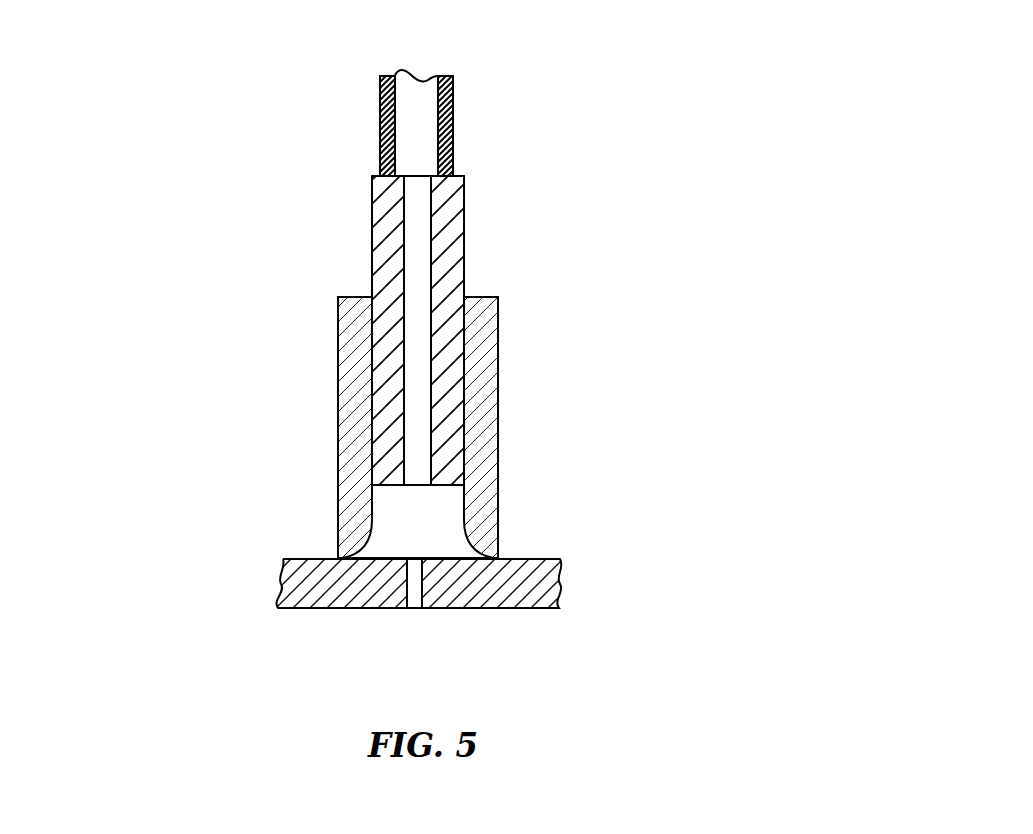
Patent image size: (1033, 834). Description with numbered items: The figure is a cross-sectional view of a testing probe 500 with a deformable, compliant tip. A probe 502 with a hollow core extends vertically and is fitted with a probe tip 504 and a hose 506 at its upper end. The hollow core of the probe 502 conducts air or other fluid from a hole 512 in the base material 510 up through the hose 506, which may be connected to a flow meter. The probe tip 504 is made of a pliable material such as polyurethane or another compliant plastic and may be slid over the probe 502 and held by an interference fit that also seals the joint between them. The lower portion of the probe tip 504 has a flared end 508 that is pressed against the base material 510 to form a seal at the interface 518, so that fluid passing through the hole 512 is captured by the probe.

The testing probe 500 is at (248, 163).
The probe 502 is at (464, 252).
The probe tip 504 is at (498, 373).
The hose 506 is at (455, 122).
The flared end 508 is at (496, 545).
The base material 510 is at (537, 558).
The hole 512 is at (413, 600).
The interface 518 is at (355, 553).